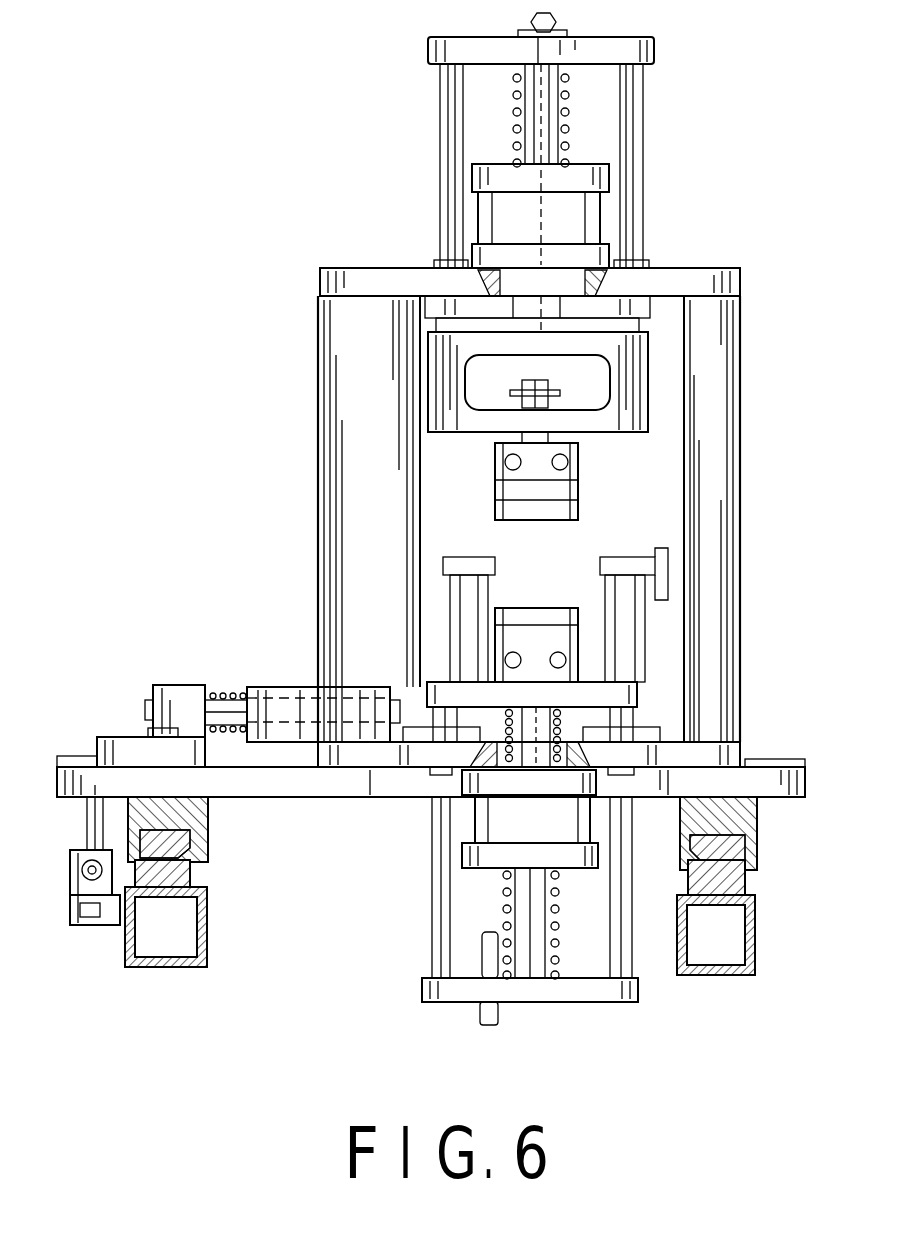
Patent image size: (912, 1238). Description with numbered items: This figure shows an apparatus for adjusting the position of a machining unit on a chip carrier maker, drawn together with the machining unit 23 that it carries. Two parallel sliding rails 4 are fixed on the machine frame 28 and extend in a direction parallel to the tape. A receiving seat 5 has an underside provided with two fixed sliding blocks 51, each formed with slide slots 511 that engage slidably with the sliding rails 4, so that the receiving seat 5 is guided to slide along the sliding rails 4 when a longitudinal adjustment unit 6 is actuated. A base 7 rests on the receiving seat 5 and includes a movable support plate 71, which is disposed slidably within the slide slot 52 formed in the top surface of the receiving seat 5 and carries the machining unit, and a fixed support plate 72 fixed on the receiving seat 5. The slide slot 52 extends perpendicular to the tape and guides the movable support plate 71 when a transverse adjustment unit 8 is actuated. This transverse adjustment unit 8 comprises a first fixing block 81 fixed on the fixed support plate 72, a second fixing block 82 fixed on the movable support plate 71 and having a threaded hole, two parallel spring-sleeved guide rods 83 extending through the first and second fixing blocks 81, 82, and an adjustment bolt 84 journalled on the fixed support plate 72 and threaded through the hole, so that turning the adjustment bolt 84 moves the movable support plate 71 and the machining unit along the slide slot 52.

The upper press cylinder unit 23 is at (674, 248).
The adjustment bolt 84 is at (145, 708).
The first fixing block 81 is at (180, 688).
The spring-sleeved guide rods 83 is at (230, 694).
The second fixing block 82 is at (302, 688).
The transverse adjustment unit 8 is at (252, 655).
The base 7 is at (413, 700).
The movable support plate 71 is at (371, 760).
The fixed support plate 72 is at (122, 740).
The slide slot 52 is at (70, 760).
The receiving seat 5 is at (57, 783).
The sliding blocks 51 is at (208, 822).
The slide slots 511 is at (195, 845).
The sliding rails 4 is at (185, 875).
The machine frame 28 is at (180, 968).
The longitudinal adjustment unit 6 is at (60, 922).